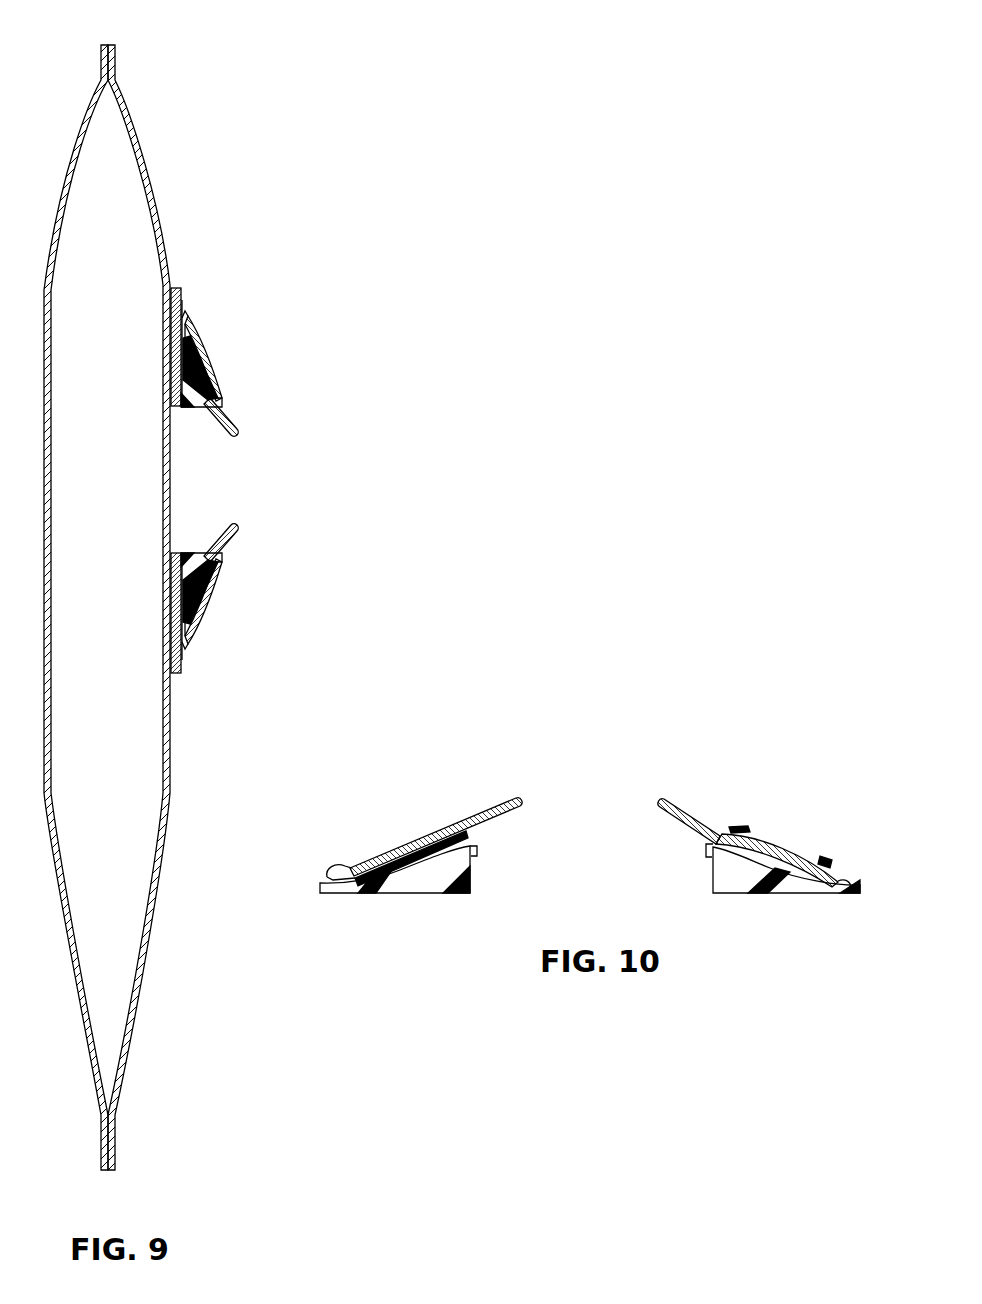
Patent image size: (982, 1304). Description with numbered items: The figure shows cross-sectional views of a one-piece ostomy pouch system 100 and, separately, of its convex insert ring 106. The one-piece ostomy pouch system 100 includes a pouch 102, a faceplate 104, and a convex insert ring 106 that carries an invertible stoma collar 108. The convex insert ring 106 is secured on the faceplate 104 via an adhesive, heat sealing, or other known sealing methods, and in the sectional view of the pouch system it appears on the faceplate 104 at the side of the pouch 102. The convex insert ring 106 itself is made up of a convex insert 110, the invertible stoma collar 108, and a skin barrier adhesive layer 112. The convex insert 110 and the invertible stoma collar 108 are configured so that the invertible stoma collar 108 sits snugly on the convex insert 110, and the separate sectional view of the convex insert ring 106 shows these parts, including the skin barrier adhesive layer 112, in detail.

In FIG. 9, the one-piece ostomy pouch system 100 is at (221, 118).
In FIG. 9, the pouch 102 is at (150, 180).
In FIG. 9, the faceplate 104 is at (185, 297).
In FIG. 9, the convex insert ring 106 is at (228, 342).
In FIG. 10, the convex insert ring 106 is at (742, 738).
In FIG. 9, the invertible stoma collar 108 is at (232, 420).
In FIG. 10, the invertible stoma collar 108 is at (490, 822).
In FIG. 9, the convex insert 110 is at (190, 410).
In FIG. 10, the convex insert 110 is at (421, 884).
In FIG. 9, the skin barrier adhesive layer 112 is at (222, 592).
In FIG. 10, the skin barrier adhesive layer 112 is at (792, 845).